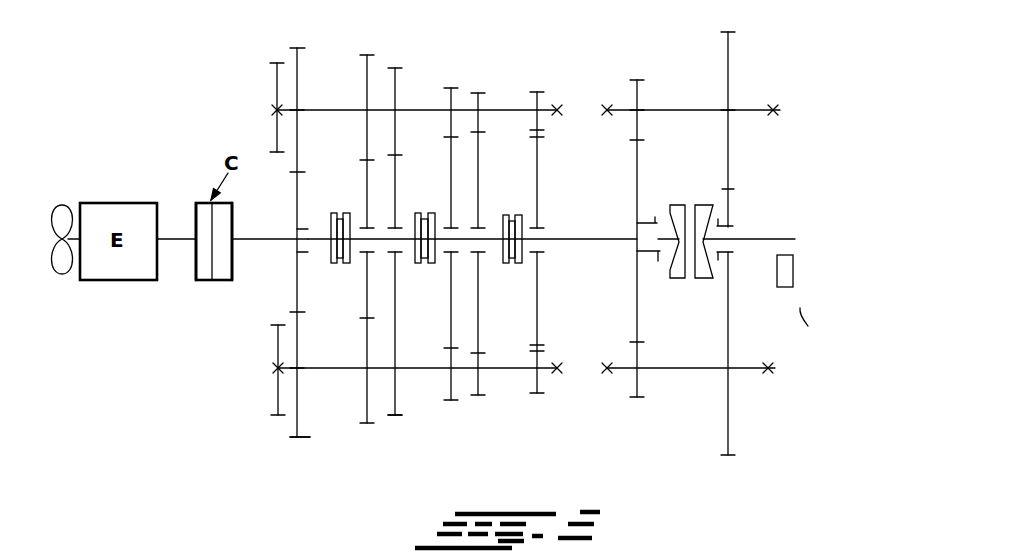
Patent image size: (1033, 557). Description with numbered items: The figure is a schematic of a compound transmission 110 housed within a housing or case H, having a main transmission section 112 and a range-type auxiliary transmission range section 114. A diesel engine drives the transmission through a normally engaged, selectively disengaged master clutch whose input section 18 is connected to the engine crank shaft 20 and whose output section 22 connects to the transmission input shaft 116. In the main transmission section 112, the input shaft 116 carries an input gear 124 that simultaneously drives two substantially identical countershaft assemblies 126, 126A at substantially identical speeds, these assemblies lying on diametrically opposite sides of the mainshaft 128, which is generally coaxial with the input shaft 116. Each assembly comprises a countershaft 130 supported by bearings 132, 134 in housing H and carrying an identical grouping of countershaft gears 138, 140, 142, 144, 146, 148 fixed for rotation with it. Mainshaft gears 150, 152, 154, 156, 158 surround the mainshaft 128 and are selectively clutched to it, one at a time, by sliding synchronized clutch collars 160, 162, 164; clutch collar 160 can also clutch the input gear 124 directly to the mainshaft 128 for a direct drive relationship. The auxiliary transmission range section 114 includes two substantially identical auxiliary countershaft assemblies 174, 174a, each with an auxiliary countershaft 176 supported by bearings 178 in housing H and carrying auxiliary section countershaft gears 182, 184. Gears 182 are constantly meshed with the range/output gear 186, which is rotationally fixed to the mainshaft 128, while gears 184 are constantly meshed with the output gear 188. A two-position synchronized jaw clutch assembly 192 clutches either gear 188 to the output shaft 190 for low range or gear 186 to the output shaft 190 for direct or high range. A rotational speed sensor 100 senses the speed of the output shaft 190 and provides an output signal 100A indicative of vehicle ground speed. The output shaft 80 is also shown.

The input section 18 is at (207, 281).
The engine crank shaft 20 is at (168, 237).
The output section 22 is at (232, 279).
The output shaft 80 is at (778, 110).
The rotational speed sensor 100 is at (800, 262).
The output signal 100A is at (800, 308).
The compound transmission 110 is at (572, 102).
The main transmission section 112 is at (410, 98).
The auxiliary transmission range section 114 is at (667, 72).
The input shaft 116 is at (254, 237).
The input gear 124 is at (297, 183).
The countershaft assembly 126 is at (315, 104).
The countershaft assembly 126A is at (340, 370).
The mainshaft 128 is at (601, 241).
The countershaft 130 is at (342, 113).
The bearing 132 is at (272, 376).
The bearing 134 is at (565, 373).
The countershaft gear 138 is at (297, 428).
The countershaft gear 140 is at (365, 414).
The countershaft gear 142 is at (399, 406).
The countershaft gear 144 is at (452, 388).
The countershaft gear 146 is at (480, 387).
The countershaft gear 148 is at (540, 384).
The mainshaft gear 150 is at (365, 304).
The mainshaft gear 152 is at (395, 285).
The mainshaft gear 154 is at (390, 332).
The mainshaft gear 156 is at (478, 285).
The mainshaft gear 158 is at (537, 325).
The sliding synchronized clutch collar 160 is at (333, 262).
The sliding synchronized clutch collar 162 is at (428, 213).
The sliding synchronized clutch collar 164 is at (500, 214).
The auxiliary countershaft assembly 174 is at (660, 108).
The auxiliary countershaft assembly 174a is at (715, 372).
The auxiliary countershaft 176 is at (708, 112).
The bearing 178 is at (606, 112).
The auxiliary section countershaft gear 182 is at (657, 67).
The auxiliary section countershaft gear 184 is at (728, 60).
The range/output gear 186 is at (637, 176).
The output gear 188 is at (721, 197).
The output shaft 190 is at (753, 237).
The synchronized jaw clutch assembly 192 is at (676, 284).
The housing H is at (277, 82).